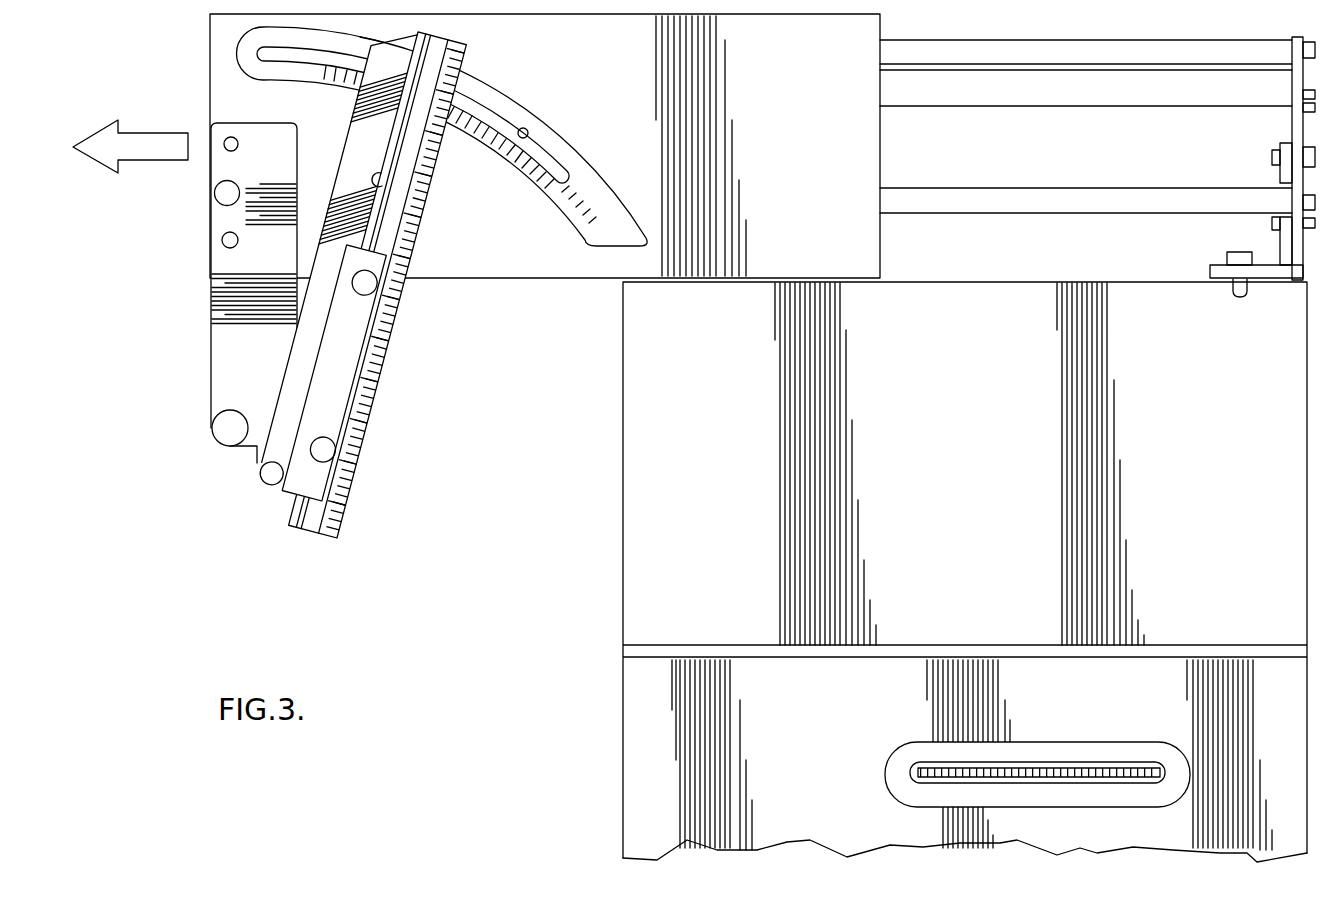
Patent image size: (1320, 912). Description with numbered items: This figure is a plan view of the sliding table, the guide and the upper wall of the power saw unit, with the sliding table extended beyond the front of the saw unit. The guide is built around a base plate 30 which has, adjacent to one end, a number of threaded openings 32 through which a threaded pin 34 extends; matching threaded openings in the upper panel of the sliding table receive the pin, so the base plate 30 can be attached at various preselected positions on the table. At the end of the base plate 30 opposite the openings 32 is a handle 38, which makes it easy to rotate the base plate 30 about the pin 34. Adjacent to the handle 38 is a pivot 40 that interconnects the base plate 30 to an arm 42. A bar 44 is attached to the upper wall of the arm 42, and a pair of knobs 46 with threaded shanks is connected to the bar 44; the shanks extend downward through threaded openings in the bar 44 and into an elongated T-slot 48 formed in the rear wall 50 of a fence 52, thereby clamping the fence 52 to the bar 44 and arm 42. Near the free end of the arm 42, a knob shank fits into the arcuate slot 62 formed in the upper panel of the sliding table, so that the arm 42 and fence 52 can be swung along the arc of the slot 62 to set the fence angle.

The base plate 30 is at (210, 368).
The threaded openings 32 is at (222, 240).
The threaded pin 34 is at (234, 184).
The handle 38 is at (219, 448).
The pivot 40 is at (263, 489).
The arm 42 is at (296, 333).
The bar 44 is at (303, 410).
The knobs 46 is at (363, 296).
The elongated T-slot 48 is at (402, 150).
The rear wall 50 is at (382, 186).
The fence 52 is at (440, 152).
The arcuate slot 62 is at (526, 129).